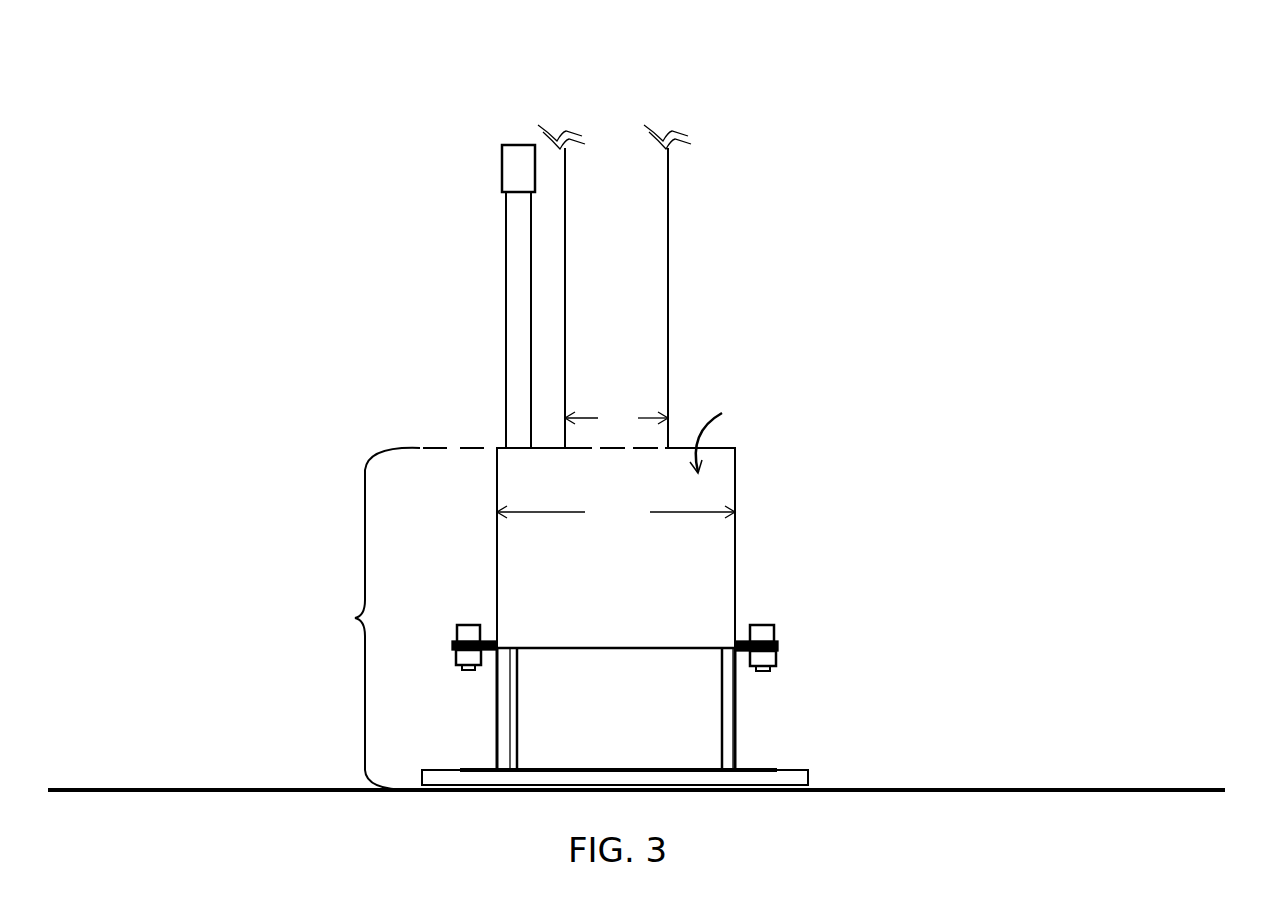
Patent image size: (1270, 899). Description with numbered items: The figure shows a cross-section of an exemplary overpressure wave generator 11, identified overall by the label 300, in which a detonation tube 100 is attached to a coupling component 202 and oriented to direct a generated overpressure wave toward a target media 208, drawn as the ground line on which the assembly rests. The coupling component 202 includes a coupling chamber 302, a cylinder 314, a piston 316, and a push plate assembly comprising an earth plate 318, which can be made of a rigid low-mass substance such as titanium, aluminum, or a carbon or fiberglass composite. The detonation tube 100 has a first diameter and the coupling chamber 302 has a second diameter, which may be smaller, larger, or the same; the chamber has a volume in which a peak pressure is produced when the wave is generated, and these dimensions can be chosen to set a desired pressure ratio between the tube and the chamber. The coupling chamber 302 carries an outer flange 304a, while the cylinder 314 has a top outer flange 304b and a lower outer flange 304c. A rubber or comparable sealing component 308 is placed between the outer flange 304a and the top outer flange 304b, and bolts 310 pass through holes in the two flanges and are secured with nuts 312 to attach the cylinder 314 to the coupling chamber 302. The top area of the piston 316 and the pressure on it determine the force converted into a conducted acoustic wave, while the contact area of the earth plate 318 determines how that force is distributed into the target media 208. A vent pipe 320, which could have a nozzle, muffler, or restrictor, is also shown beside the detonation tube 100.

The mounting system 300 is at (633, 47).
The overpressure wave generator 11 is at (670, 101).
The vent pipe 320 is at (503, 236).
The detonation tube 100 is at (670, 380).
The coupling chamber 302 is at (740, 488).
The coupling component 202 is at (355, 618).
The piston 316 is at (558, 653).
The cylinder 314 is at (740, 735).
The lower outer flange 304c is at (778, 757).
The earth plate 318 is at (552, 780).
The bolts 310 is at (467, 627).
The nuts 312 is at (460, 670).
The outer flange 304a is at (780, 633).
The sealing component 308 is at (778, 640).
The top outer flange 304b is at (778, 650).
The target media 208 is at (162, 822).